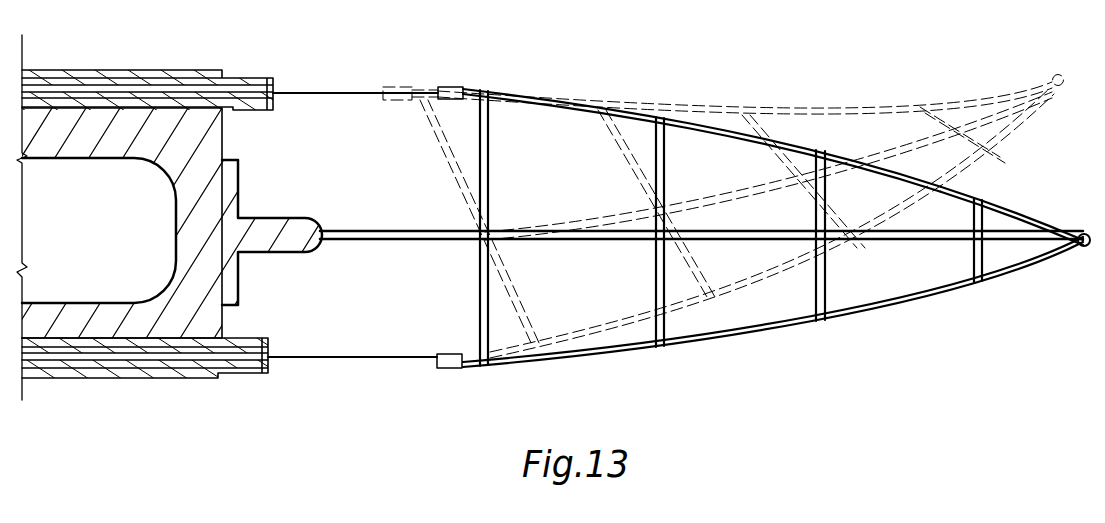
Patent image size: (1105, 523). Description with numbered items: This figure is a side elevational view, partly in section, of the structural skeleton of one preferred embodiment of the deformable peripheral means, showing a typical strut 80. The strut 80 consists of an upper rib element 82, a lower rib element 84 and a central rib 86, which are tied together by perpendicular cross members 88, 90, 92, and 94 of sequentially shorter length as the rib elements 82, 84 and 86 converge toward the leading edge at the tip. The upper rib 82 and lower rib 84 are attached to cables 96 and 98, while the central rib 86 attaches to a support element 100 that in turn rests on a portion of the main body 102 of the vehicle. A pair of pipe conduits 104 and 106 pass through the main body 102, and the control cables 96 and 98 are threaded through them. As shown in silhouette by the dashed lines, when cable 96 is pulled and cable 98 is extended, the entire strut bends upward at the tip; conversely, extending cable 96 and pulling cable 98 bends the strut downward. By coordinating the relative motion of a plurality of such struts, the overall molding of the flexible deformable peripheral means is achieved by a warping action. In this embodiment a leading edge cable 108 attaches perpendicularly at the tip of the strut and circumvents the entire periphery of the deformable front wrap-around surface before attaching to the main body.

The strut 80 is at (727, 120).
The upper rib element 82 is at (1003, 200).
The lower rib element 84 is at (896, 313).
The central rib 86 is at (914, 250).
The cross member 88 is at (490, 136).
The cross member 90 is at (665, 162).
The cross member 92 is at (827, 182).
The cross member 94 is at (984, 223).
The cable 96 is at (323, 92).
The cable 98 is at (315, 356).
The support element 100 is at (276, 218).
The main body 102 is at (192, 240).
The pipe conduit 104 is at (249, 71).
The pipe conduit 106 is at (244, 374).
The leading edge cable 108 is at (1083, 252).